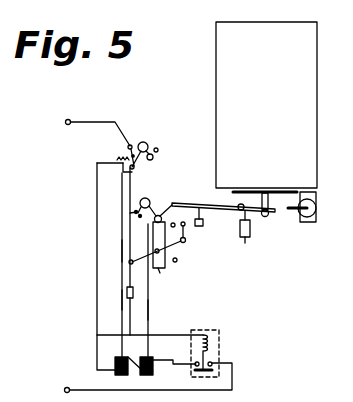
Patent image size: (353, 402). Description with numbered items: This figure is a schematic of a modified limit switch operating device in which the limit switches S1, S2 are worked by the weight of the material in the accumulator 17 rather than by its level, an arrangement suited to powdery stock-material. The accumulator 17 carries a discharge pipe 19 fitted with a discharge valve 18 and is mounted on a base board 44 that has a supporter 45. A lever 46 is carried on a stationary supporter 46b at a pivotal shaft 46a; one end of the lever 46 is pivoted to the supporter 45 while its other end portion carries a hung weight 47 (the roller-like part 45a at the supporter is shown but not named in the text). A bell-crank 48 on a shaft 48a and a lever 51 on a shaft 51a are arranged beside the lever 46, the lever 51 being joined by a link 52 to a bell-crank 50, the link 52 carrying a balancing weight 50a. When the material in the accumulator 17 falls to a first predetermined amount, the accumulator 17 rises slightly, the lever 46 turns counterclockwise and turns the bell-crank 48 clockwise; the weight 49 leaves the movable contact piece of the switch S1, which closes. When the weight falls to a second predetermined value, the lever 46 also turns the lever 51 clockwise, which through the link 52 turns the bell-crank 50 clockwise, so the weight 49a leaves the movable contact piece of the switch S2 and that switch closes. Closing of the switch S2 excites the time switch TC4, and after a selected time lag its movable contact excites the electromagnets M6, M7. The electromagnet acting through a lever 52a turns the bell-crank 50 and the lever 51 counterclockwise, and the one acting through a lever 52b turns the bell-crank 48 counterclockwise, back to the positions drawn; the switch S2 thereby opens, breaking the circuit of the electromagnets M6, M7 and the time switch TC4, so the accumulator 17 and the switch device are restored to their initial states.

The accumulator 17 is at (311, 107).
The discharge valve 18 is at (317, 212).
The discharge pipe 19 is at (316, 203).
The base board 44 is at (279, 190).
The supporter 45 is at (268, 207).
The roller on post 45a is at (265, 218).
The lever 46 is at (204, 222).
The pivotal shaft 46a is at (238, 205).
The stationary supporter 46b is at (243, 238).
The weight 47 is at (186, 240).
The bell-crank 48 is at (161, 214).
The shaft 48a is at (180, 221).
The weight 49 is at (146, 199).
The weight 49a is at (147, 143).
The bell-crank 50 is at (151, 160).
The balancing weight 50a is at (158, 151).
The lever 51 is at (178, 258).
The shaft 51a is at (171, 278).
The link 52 is at (127, 263).
The lever 52a is at (122, 300).
The lever 52b is at (150, 312).
The limit switch S1 is at (131, 211).
The limit switch S2 is at (126, 151).
The electromagnet M6 is at (121, 362).
The electromagnet M7 is at (152, 357).
The time switch TC4 is at (222, 338).